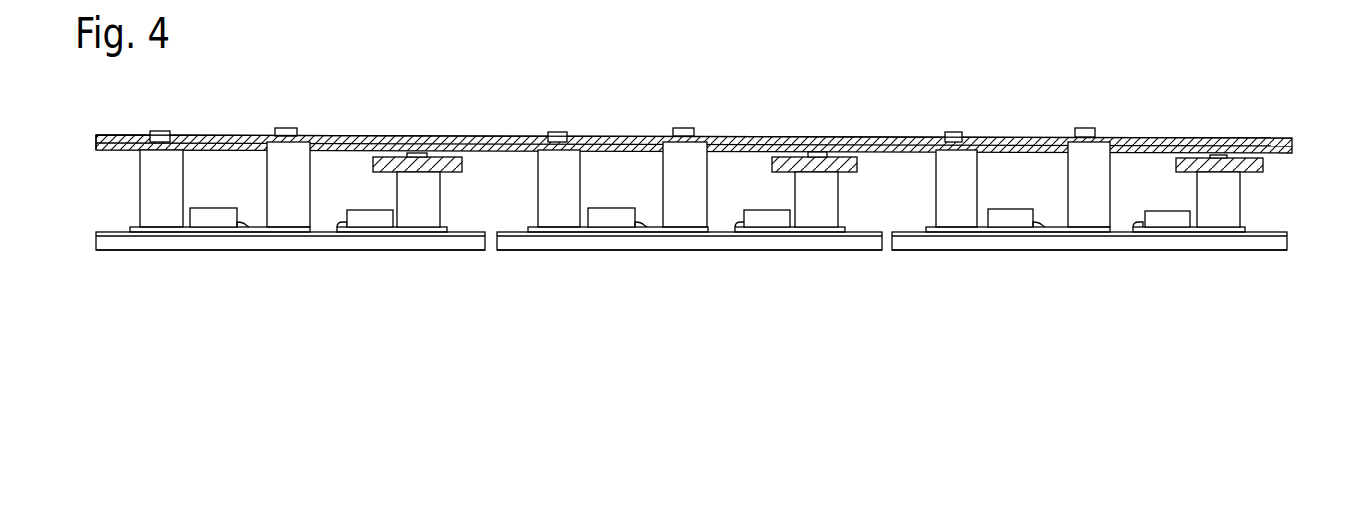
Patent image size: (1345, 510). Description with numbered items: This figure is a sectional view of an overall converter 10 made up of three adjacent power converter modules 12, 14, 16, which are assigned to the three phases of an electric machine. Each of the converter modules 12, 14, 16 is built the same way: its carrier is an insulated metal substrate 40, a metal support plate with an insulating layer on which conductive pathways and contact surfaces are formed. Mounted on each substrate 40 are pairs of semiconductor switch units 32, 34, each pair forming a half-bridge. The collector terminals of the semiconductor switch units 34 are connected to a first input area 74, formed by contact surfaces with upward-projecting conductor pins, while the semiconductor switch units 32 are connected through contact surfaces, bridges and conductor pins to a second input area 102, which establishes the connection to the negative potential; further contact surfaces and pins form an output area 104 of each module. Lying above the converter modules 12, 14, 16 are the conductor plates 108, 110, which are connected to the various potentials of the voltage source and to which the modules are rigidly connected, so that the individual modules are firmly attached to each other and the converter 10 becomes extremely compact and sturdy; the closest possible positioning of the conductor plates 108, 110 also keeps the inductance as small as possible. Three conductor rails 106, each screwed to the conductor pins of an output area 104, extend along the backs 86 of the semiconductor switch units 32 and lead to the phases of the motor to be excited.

The converter 10 is at (891, 128).
The power converter module 12 is at (355, 258).
The converter module 14 is at (605, 262).
The converter module 16 is at (1042, 262).
The semiconductor switch unit 32 is at (365, 210).
The semiconductor switch unit 34 is at (210, 208).
The insulated metal substrate 40 is at (195, 250).
The first input area 74 is at (118, 203).
The back of semiconductor switch unit 86 is at (405, 231).
The second input area 102 is at (328, 100).
The output area 104 is at (452, 198).
The conductor rail 106 is at (452, 157).
The conductor plate 108 is at (107, 149).
The conductor plate 110 is at (248, 145).